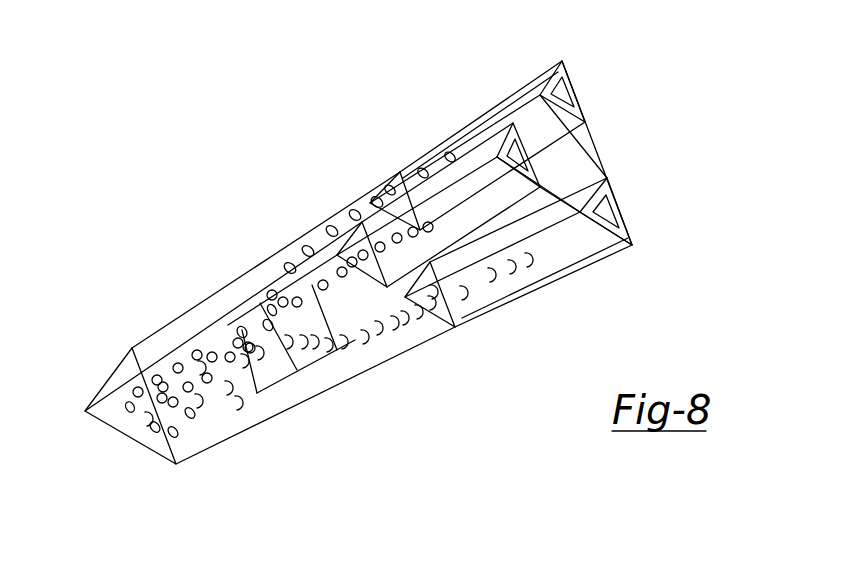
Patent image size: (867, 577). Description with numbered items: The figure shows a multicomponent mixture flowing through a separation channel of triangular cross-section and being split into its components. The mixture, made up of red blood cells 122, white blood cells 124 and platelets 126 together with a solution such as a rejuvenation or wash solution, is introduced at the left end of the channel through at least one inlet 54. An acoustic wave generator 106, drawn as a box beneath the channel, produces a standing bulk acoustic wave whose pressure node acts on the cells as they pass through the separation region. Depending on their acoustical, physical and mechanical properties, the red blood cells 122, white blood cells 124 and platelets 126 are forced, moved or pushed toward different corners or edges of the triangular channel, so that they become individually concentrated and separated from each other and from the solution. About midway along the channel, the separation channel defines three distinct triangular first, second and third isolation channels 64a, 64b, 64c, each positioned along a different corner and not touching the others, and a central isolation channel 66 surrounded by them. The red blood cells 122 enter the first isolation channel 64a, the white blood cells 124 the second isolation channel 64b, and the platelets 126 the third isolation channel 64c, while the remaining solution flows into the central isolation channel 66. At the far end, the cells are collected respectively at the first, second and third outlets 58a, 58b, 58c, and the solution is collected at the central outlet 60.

The inlet 54 is at (126, 433).
The first outlet 58a is at (578, 70).
The second outlet 58b is at (545, 171).
The third outlet 58c is at (634, 212).
The central outlet 60 is at (575, 176).
The first isolation channel 64a is at (408, 170).
The second isolation channel 64b is at (363, 215).
The third isolation channel 64c is at (556, 287).
The central isolation channel 66 is at (605, 262).
The acoustic wave generator 106 is at (280, 388).
The red blood cells 122 is at (336, 290).
The white blood cells 124 is at (294, 264).
The platelets 126 is at (231, 400).